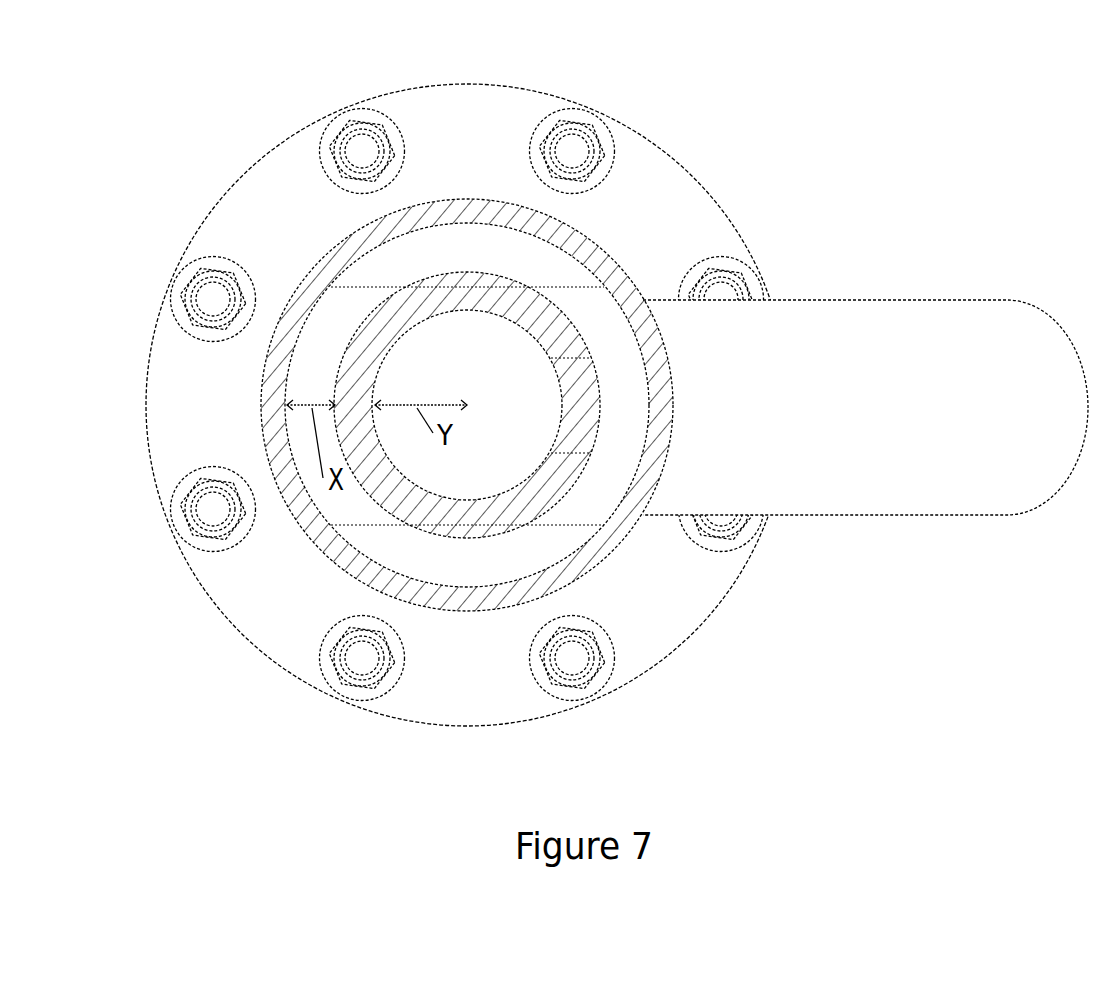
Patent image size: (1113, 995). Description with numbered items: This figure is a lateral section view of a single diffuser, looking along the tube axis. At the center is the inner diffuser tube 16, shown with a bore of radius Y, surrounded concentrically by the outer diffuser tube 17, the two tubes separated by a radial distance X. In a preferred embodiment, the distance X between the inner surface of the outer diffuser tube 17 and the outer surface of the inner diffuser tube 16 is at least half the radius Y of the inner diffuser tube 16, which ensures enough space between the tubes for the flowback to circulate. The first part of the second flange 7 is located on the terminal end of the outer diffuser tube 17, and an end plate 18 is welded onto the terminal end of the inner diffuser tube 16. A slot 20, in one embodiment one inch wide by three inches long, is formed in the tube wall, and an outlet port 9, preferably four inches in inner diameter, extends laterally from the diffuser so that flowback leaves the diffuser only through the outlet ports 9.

The first part of second flange 7 is at (628, 642).
The outlet port 9 is at (885, 423).
The inner diffuser tube 16 is at (470, 596).
The outer diffuser tube 17 is at (393, 502).
The end plate (cap) 18 is at (327, 337).
The slot 20 is at (573, 428).